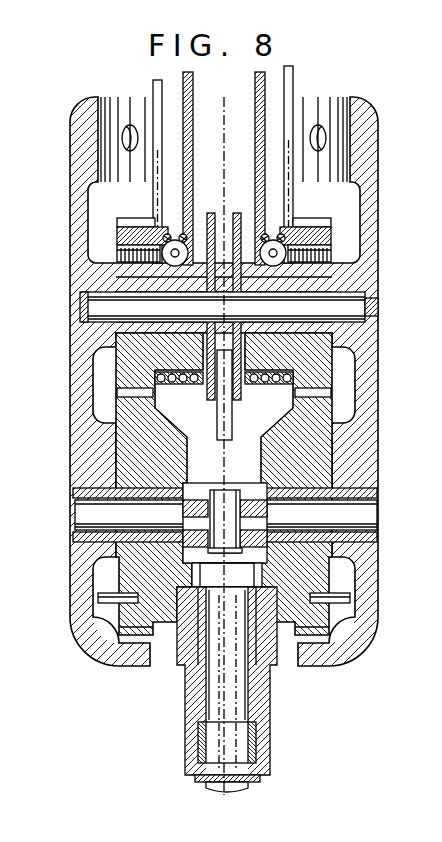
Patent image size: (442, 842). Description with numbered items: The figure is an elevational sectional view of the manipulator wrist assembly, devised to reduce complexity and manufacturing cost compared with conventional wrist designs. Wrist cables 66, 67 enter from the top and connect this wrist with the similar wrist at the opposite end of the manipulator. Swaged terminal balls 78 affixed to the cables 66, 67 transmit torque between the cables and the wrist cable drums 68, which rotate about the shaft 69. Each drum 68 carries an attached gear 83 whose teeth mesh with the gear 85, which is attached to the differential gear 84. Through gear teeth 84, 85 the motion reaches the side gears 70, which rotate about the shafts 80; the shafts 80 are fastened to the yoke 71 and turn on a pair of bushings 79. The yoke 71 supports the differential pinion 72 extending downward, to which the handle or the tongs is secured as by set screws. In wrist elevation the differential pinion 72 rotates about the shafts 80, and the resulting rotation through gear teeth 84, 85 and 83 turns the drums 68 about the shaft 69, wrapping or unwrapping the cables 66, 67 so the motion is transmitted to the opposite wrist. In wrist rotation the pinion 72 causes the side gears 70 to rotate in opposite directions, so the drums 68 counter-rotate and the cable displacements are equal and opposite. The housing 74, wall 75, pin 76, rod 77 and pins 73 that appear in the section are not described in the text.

The wrist cable 66 is at (152, 85).
The wrist cable 67 is at (193, 86).
The gear 83 is at (135, 222).
The swaged terminal ball 78 is at (166, 250).
The wrist cable drum 68 is at (165, 252).
The housing 74 is at (73, 262).
The shaft 69 is at (95, 307).
The gear 85 is at (132, 393).
The housing wall 75 is at (380, 430).
The center pin 76 is at (214, 396).
The differential gear 84 is at (232, 427).
The side gear 70 is at (280, 463).
The center rod 77 is at (222, 492).
The shaft 80 is at (95, 511).
The bushing 79 is at (100, 538).
The yoke 71 is at (192, 555).
The pin 73 is at (100, 598).
The differential pinion 72 is at (185, 688).